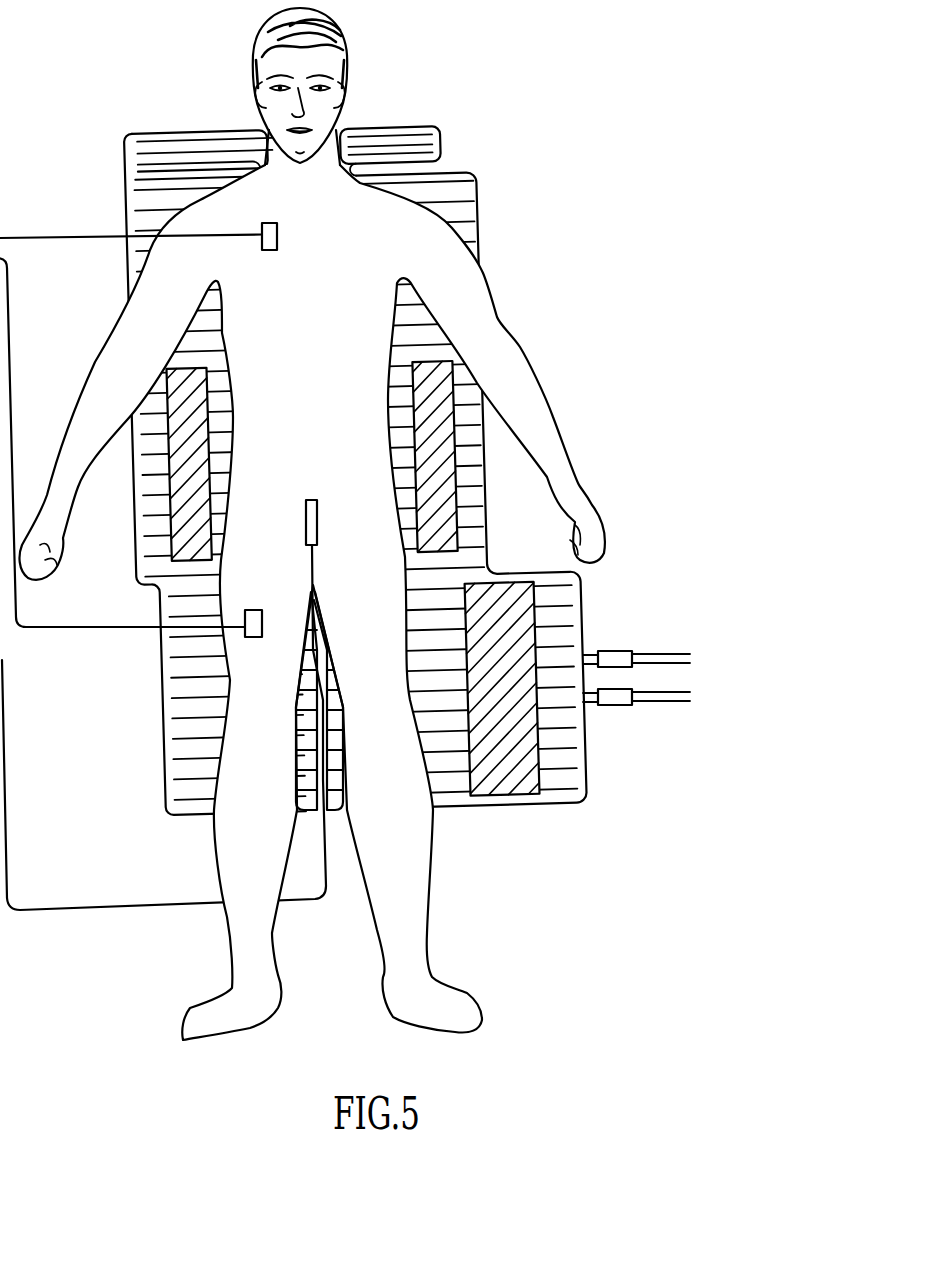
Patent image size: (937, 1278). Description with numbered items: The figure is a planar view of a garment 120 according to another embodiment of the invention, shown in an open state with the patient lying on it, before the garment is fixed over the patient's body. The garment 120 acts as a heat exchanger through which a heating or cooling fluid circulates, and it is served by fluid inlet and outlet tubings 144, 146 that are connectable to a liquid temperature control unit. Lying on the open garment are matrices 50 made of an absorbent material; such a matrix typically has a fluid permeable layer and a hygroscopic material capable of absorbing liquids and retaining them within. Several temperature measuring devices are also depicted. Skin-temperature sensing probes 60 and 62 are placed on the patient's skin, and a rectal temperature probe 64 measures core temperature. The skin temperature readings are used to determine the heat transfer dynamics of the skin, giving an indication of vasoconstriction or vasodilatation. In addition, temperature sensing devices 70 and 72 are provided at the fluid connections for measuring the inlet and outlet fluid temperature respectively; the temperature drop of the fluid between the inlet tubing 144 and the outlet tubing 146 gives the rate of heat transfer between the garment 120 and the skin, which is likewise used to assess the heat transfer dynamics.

The matrix 50 is at (520, 787).
The skin-temperature sensing probe 60 is at (275, 223).
The skin-temperature sensing probe 62 is at (245, 638).
The rectal temperature probe 64 is at (318, 530).
The garment 120 is at (537, 604).
The temperature sensing device 70 is at (612, 650).
The temperature sensing device 72 is at (610, 708).
The fluid inlet tubing 144 is at (657, 650).
The fluid outlet tubing 146 is at (658, 703).